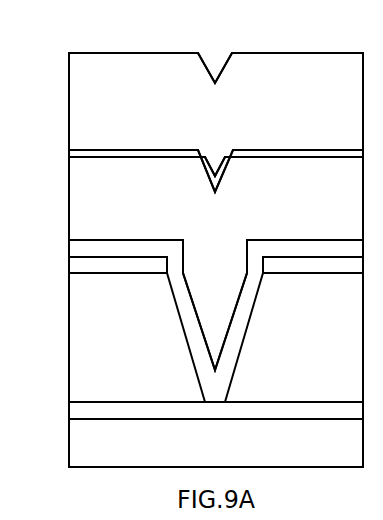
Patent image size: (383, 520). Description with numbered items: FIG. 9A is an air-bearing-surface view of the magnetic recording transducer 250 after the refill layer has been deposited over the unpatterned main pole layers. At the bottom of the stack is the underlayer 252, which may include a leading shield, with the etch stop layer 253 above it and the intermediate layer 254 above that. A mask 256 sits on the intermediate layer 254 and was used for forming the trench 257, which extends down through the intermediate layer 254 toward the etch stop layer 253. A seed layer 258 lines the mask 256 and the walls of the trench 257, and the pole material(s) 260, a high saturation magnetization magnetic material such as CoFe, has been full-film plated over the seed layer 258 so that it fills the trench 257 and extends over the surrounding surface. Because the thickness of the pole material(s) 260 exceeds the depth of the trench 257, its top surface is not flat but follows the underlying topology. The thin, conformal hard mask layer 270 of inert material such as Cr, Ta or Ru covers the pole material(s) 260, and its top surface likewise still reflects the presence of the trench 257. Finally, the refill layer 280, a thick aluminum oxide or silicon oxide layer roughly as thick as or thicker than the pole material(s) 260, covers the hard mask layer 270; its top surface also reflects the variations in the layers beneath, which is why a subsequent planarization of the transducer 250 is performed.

The transducer 250 is at (236, 40).
The underlayer 252 is at (216, 443).
The etch stop layer 253 is at (69, 410).
The intermediate layer 254 is at (216, 337).
The mask 256 is at (93, 273).
The trench 257 is at (213, 254).
The seed layer 258 is at (69, 248).
The pole material(s) 260 is at (216, 263).
The hard mask layer 270 is at (69, 153).
The refill layer 280 is at (216, 122).